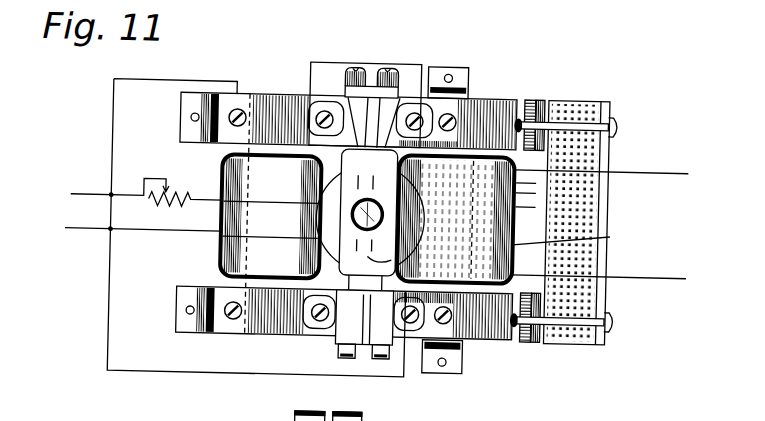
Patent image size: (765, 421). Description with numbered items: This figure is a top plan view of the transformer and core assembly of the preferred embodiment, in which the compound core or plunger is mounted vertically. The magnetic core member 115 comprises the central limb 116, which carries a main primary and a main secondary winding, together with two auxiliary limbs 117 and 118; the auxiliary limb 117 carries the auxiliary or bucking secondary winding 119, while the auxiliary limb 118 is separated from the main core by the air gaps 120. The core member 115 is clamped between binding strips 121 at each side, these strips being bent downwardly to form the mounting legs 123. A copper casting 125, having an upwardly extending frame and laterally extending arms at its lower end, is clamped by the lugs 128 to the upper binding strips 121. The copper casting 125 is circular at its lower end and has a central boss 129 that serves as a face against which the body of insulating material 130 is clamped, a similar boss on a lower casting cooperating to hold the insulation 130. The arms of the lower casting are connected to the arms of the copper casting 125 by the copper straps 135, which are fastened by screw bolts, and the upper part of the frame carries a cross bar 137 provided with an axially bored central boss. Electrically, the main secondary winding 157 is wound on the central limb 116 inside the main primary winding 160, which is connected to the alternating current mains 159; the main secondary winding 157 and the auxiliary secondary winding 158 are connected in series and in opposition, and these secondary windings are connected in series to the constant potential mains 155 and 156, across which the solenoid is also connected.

The core member 115 is at (262, 96).
The central limb 116 is at (528, 104).
The auxiliary limb 117 is at (271, 143).
The auxiliary limb 118 is at (568, 183).
The auxiliary secondary winding 119 is at (239, 208).
The air gaps 120 is at (550, 108).
The binding strips 121 is at (235, 97).
The mounting legs 123 is at (193, 128).
The copper casting 125 is at (332, 322).
The lugs 128 is at (405, 110).
The central boss 129 is at (454, 68).
The body of insulating material 130 is at (401, 211).
The copper straps 135 is at (367, 221).
The cross bar 137 is at (388, 262).
The constant potential main 155 is at (84, 171).
The constant potential main 156 is at (88, 237).
The main secondary winding 157 is at (506, 343).
The auxiliary secondary winding 158 is at (240, 241).
The alternating current mains 159 is at (680, 266).
The main primary winding 160 is at (581, 236).